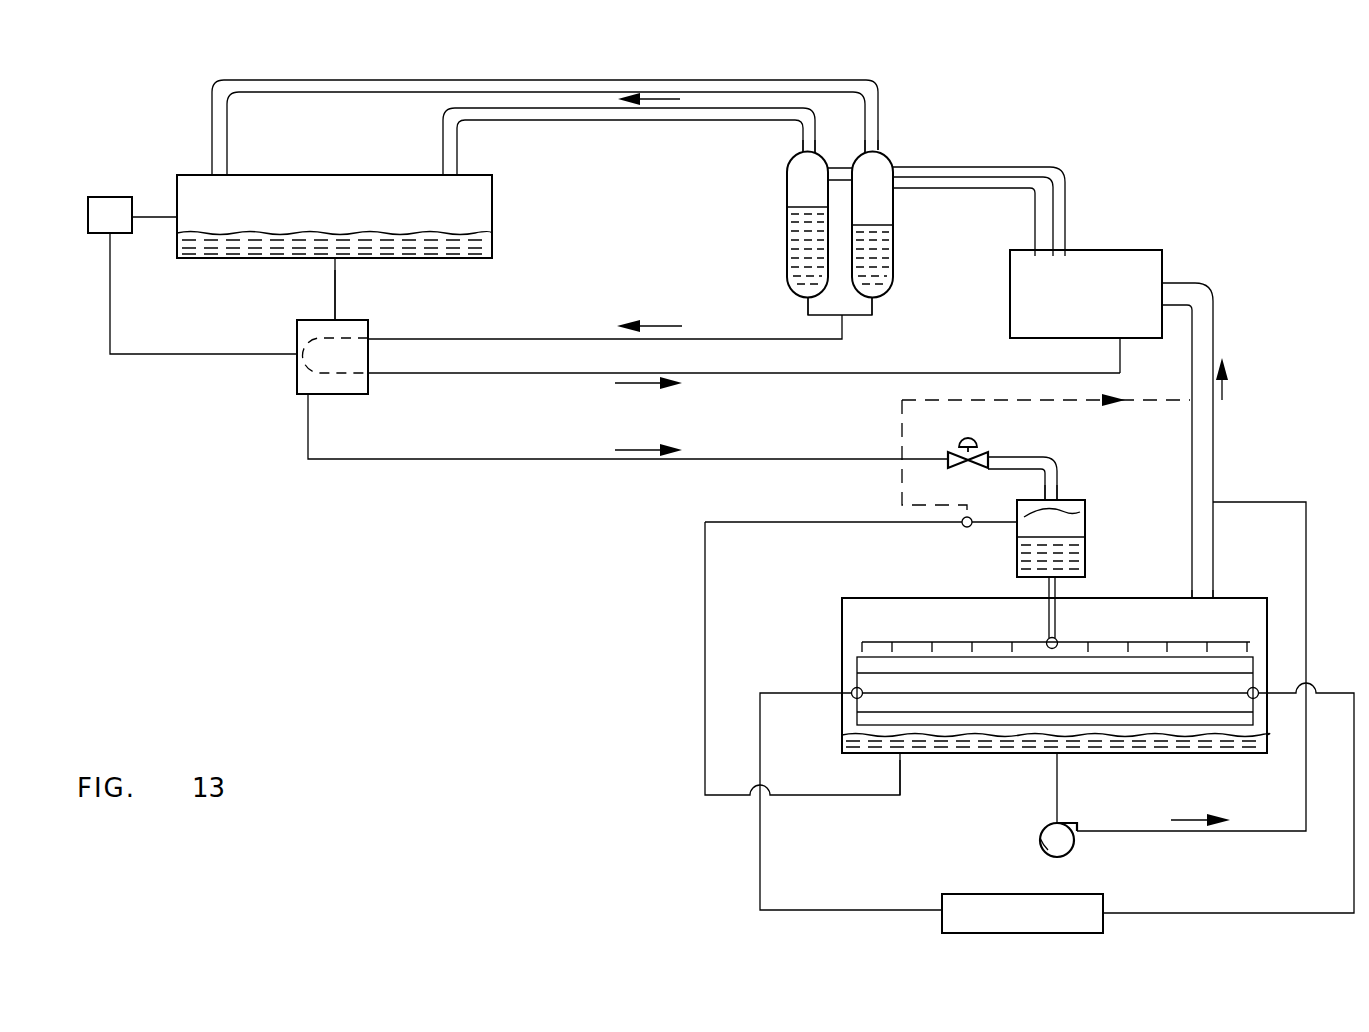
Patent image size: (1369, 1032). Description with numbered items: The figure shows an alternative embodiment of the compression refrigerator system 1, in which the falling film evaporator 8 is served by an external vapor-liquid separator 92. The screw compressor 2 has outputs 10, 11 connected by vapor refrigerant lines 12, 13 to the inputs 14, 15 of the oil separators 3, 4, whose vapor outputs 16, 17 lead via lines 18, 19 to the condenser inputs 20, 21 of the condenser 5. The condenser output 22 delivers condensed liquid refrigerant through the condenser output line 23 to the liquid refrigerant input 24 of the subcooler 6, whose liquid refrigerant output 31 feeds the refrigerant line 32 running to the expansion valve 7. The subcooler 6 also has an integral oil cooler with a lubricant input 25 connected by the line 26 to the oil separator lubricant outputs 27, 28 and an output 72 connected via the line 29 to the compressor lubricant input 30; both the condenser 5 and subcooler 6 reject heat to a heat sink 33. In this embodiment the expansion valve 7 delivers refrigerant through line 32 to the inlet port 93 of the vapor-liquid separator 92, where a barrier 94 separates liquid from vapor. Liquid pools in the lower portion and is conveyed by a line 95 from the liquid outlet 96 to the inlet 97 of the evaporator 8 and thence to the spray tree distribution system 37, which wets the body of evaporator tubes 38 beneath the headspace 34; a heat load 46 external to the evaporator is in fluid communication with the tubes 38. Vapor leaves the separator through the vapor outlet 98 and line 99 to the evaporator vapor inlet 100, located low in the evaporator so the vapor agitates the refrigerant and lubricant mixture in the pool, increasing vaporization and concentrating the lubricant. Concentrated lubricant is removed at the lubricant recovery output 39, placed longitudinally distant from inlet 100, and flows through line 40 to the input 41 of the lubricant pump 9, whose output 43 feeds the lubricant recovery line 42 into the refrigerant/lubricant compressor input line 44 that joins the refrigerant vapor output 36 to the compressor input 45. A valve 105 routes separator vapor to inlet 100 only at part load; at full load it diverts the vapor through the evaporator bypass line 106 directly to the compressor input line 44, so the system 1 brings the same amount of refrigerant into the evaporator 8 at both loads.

The compression refrigerator system 1 is at (352, 478).
The screw compressor 2 is at (1085, 250).
The oil separator 3 is at (893, 218).
The oil separator 4 is at (787, 220).
The condenser 5 is at (492, 218).
The subcooler 6 is at (297, 365).
The expansion valve 7 is at (950, 455).
The falling film evaporator 8 is at (842, 640).
The lubricant pump 9 is at (1066, 845).
The output 10 is at (1036, 258).
The output 11 is at (1053, 256).
The vapor refrigerant line 12 is at (950, 190).
The vapor refrigerant line 13 is at (1020, 172).
The input 14 is at (898, 167).
The input 15 is at (840, 165).
The vapor output 16 is at (878, 152).
The vapor output 17 is at (800, 150).
The line 18 is at (730, 78).
The line 19 is at (680, 122).
The condenser input 20 is at (228, 175).
The condenser input 21 is at (457, 175).
The condenser output 22 is at (338, 260).
The condenser output line 23 is at (335, 268).
The liquid refrigerant input 24 is at (333, 318).
The lubricant input 25 is at (370, 338).
The line 26 is at (470, 339).
The lubricant output 27 is at (806, 300).
The lubricant output 28 is at (876, 300).
The line 29 is at (815, 373).
The compressor lubricant input 30 is at (1125, 345).
The liquid refrigerant output 31 is at (302, 396).
The refrigerant line 32 is at (605, 460).
The heat sink 33 is at (110, 197).
The headspace 34 is at (1212, 638).
The refrigerant vapor output 36 is at (1215, 598).
The spray tree distribution system 37 is at (1140, 642).
The body of evaporator tubes 38 is at (1258, 688).
The lubricant recovery output 39 is at (1062, 755).
The line 40 is at (1057, 774).
The input 41 is at (1042, 838).
The lubricant recovery line 42 is at (1283, 832).
The output 43 is at (1080, 830).
The refrigerant/lubricant compressor input line 44 is at (1213, 438).
The compressor input 45 is at (1170, 283).
The heat load 46 is at (1006, 925).
The output 72 is at (370, 380).
The vapor-liquid separator 92 is at (1085, 527).
The inlet port 93 is at (1057, 498).
The barrier 94 is at (1085, 510).
The line 95 is at (1085, 572).
The liquid outlet 96 is at (1047, 590).
The inlet 97 is at (1058, 605).
The vapor outlet 98 is at (1015, 522).
The line 99 is at (705, 585).
The evaporator vapor inlet 100 is at (905, 755).
The valve 105 is at (965, 528).
The evaporator bypass line 106 is at (900, 440).